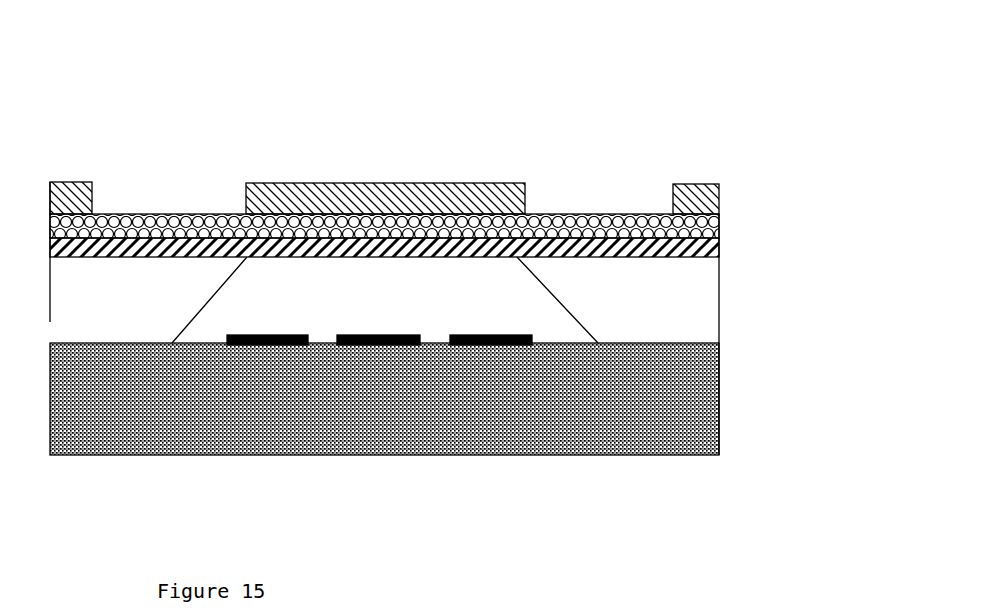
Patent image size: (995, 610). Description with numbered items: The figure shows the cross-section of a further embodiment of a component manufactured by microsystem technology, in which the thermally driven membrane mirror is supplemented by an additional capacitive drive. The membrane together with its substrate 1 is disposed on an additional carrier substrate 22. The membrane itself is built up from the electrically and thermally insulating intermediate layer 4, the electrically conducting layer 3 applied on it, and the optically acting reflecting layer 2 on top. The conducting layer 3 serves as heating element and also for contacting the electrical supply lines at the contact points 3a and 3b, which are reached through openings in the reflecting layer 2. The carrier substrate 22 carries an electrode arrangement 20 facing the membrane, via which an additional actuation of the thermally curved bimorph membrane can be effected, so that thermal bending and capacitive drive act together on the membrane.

The substrate 1 is at (702, 310).
The optically acting reflecting layer 2 is at (398, 203).
The electrically conducting layer 3 is at (719, 225).
The contact point 3a is at (133, 214).
The contact point 3b is at (593, 214).
The electrically insulating intermediate layer 4 is at (719, 257).
The electrode arrangement 20 is at (285, 345).
The carrier substrate 22 is at (705, 392).